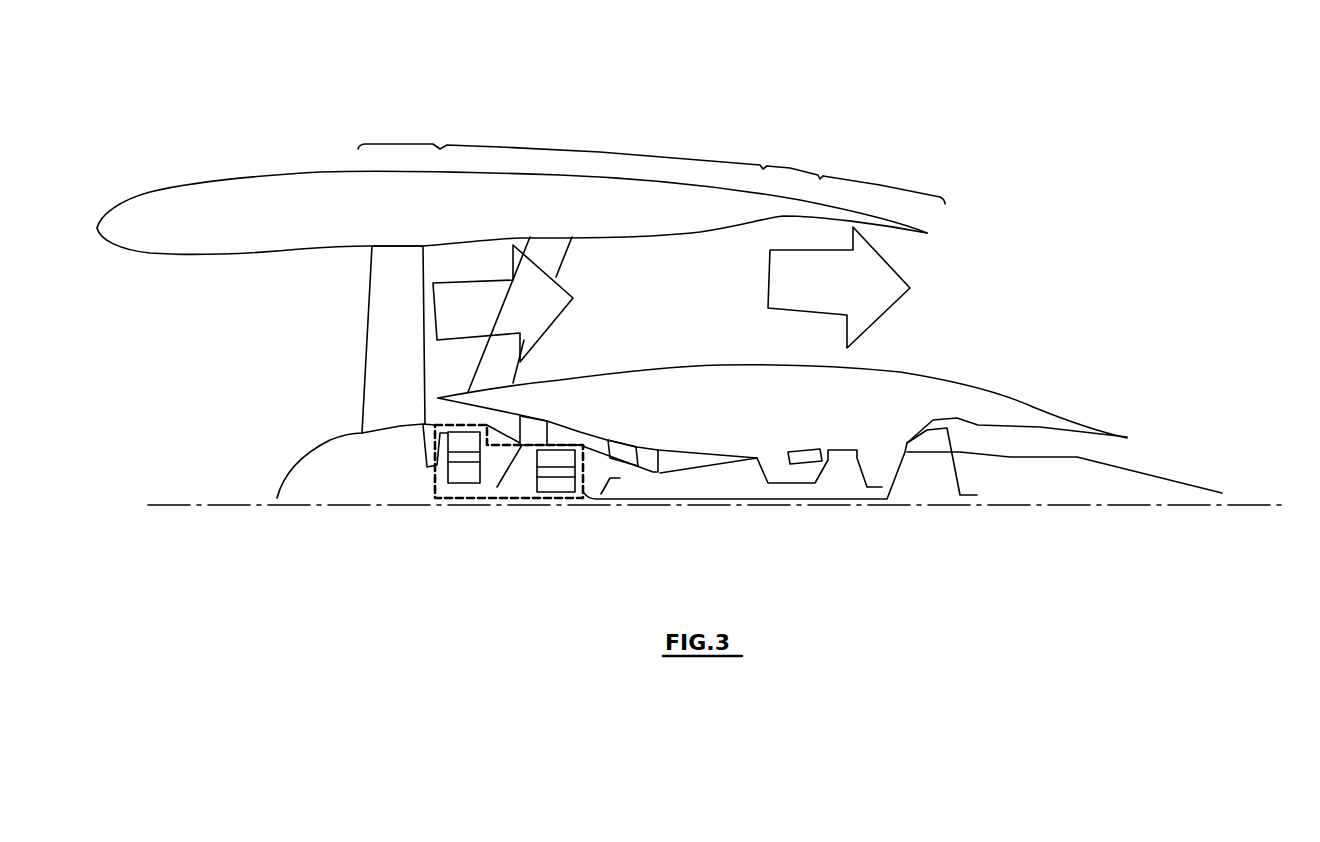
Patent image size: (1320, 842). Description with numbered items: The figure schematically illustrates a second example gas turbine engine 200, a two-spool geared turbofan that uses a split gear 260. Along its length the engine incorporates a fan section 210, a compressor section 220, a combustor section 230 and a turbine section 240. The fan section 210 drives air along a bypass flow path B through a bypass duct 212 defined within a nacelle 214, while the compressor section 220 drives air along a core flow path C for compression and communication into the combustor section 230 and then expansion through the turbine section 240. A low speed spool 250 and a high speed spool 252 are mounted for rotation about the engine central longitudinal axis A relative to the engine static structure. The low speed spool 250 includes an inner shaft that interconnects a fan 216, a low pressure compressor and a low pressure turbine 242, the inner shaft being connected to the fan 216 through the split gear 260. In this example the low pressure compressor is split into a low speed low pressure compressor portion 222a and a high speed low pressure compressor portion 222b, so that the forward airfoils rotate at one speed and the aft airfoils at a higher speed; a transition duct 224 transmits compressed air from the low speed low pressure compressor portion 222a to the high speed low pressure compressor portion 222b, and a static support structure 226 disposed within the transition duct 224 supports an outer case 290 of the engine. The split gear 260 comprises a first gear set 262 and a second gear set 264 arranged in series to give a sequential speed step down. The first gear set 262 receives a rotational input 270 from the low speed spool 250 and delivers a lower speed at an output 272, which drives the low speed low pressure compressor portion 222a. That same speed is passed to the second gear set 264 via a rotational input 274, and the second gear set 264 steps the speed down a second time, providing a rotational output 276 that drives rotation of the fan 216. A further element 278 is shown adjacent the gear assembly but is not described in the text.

The gas turbine engine 200 is at (730, 92).
The fan section 210 is at (405, 145).
The bypass duct 212 is at (661, 306).
The nacelle 214 is at (298, 198).
The fan 216 is at (382, 344).
The compressor section 220 is at (602, 150).
The low speed low pressure compressor portion 222a is at (537, 423).
The high speed low pressure compressor portion 222b is at (620, 453).
The transition duct 224 is at (590, 447).
The static support structure 226 is at (572, 445).
The combustor section 230 is at (795, 168).
The turbine section 240 is at (880, 185).
The low pressure turbine 242 is at (932, 447).
The low speed spool 250 is at (838, 500).
The high speed spool 252 is at (793, 483).
The split gear 260 is at (562, 500).
The first gear set 262 is at (553, 486).
The second gear set 264 is at (463, 476).
The rotational input 270 is at (573, 500).
The output 272 is at (537, 458).
The rotational input 274 is at (490, 486).
The rotational output 276 is at (423, 447).
The support 278 is at (617, 478).
The outer case 290 is at (774, 418).
The engine central longitudinal axis A is at (726, 506).
The bypass flow path B is at (877, 290).
The core flow path C is at (1012, 443).